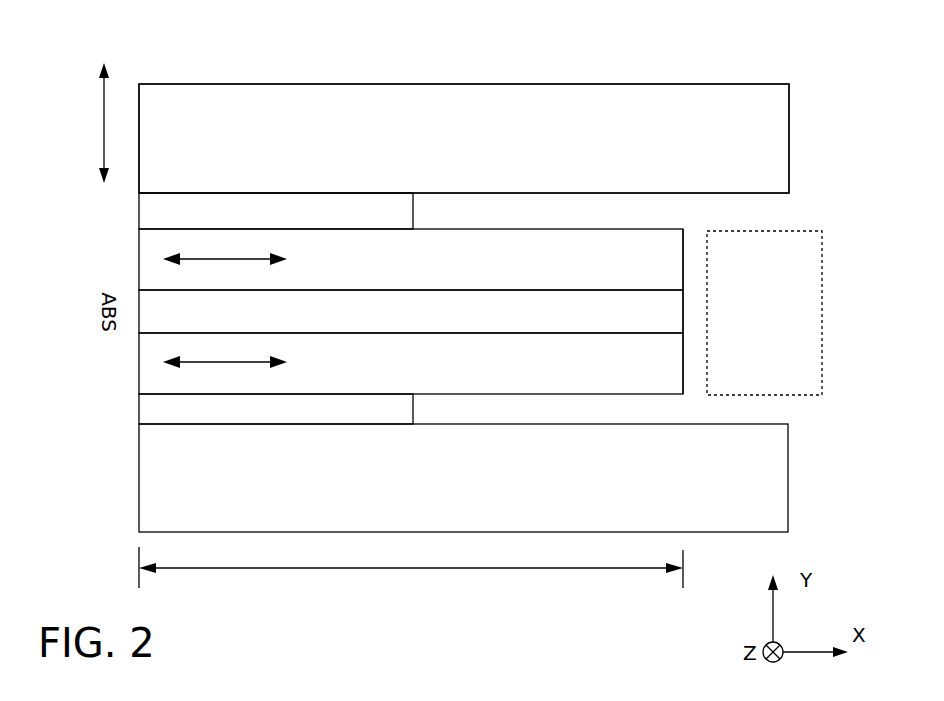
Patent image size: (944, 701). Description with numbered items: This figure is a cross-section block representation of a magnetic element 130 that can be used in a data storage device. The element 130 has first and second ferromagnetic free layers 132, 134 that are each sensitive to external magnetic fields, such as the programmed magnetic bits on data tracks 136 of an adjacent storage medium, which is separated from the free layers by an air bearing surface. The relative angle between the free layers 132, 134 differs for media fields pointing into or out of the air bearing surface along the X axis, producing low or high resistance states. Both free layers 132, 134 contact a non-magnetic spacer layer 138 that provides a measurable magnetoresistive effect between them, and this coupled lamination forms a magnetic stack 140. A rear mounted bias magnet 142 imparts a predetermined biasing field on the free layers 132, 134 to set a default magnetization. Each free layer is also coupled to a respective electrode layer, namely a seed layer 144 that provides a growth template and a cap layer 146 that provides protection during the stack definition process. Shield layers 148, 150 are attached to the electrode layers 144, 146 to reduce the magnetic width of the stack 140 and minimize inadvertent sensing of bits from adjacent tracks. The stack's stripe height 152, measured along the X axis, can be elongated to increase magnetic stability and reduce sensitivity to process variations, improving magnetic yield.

The magnetic element 130 is at (736, 66).
The first ferromagnetic free layer 132 is at (411, 259).
The second ferromagnetic free layer 134 is at (411, 363).
The data track 136 is at (126, 117).
The non-magnetic spacer layer 138 is at (411, 311).
The magnetic stack 140 is at (688, 399).
The rear mounted bias magnet 142 is at (764, 313).
The seed layer 144 is at (276, 409).
The cap layer 146 is at (276, 211).
The shield layer 148 is at (463, 478).
The shield layer 150 is at (464, 138).
The stripe height 152 is at (411, 570).